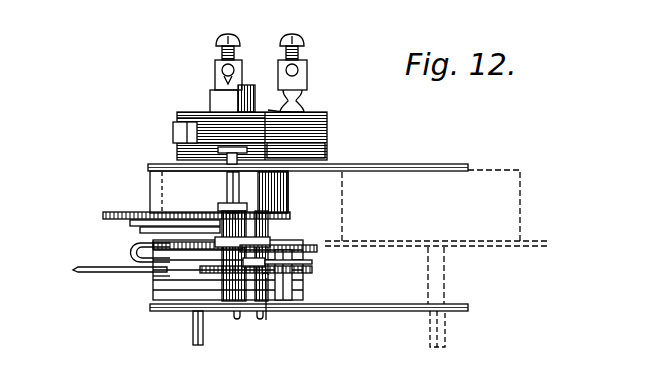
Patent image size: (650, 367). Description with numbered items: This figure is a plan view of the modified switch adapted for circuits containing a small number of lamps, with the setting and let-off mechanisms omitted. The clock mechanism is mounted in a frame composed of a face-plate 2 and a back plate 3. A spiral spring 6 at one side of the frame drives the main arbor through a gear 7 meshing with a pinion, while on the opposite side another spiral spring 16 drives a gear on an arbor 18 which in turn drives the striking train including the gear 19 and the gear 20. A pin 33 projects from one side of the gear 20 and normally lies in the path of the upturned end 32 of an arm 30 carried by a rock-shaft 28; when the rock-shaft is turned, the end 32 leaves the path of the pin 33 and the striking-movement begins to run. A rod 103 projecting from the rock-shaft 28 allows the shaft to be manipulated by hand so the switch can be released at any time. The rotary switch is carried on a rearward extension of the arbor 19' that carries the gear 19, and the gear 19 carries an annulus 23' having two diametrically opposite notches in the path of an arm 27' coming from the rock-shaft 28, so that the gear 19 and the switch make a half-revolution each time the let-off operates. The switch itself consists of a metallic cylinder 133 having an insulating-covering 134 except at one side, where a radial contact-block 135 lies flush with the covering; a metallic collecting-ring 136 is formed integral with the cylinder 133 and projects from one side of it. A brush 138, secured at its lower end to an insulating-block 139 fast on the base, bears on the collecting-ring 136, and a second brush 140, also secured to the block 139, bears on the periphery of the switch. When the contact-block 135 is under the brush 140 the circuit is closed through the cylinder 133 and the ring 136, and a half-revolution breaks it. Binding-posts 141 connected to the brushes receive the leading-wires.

The binding-posts 141 is at (277, 55).
The arbor 19' is at (247, 142).
The brush 138 is at (249, 100).
The collecting-ring 136 is at (212, 102).
The contact-block 135 is at (190, 124).
The brush 140 is at (172, 129).
The metallic cylinder 133 is at (284, 110).
The insulating-covering 134 is at (328, 114).
The insulating-block 139 is at (327, 142).
The back plate 3 is at (368, 166).
The spiral spring 6 is at (521, 197).
The gear 7 is at (520, 247).
The face-plate 2 is at (364, 305).
The spiral spring 16 is at (162, 191).
The gear 19 is at (267, 241).
The annulus 23' is at (293, 265).
The gear 20 is at (276, 273).
The upturned end 32 is at (273, 290).
The pin 33 is at (260, 274).
The arbor 18 is at (192, 328).
The rock-shaft 28 is at (152, 280).
The arm 30 is at (178, 289).
The arm 27' is at (129, 250).
The rod 103 is at (118, 262).